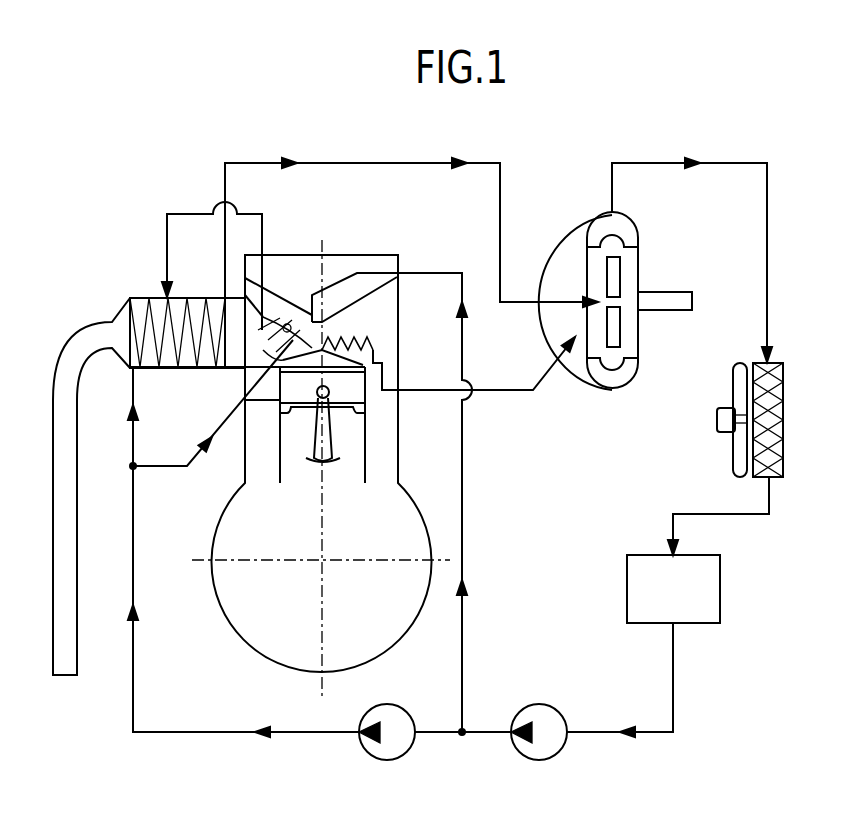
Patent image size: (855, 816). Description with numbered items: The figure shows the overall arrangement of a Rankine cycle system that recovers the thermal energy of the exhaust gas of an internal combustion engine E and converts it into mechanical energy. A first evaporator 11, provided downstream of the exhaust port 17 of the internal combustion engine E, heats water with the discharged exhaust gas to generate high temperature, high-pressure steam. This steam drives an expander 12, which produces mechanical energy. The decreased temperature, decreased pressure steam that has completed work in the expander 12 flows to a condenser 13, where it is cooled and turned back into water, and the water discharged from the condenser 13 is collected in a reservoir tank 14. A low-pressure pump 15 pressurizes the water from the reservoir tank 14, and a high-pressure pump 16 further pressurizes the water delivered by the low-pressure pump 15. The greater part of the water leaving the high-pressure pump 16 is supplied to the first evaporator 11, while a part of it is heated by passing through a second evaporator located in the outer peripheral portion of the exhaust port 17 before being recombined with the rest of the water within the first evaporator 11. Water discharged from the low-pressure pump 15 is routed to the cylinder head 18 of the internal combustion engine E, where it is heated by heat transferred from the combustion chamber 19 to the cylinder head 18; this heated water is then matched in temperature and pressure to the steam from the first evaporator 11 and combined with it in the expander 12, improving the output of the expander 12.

The first evaporator 11 is at (140, 293).
The expander 12 is at (557, 232).
The condenser 13 is at (790, 438).
The reservoir tank 14 is at (703, 625).
The low-pressure pump 15 is at (547, 702).
The high-pressure pump 16 is at (398, 702).
The exhaust port 17 is at (287, 324).
The cylinder head 18 is at (400, 357).
The combustion chamber 19 is at (335, 360).
The internal combustion engine E is at (233, 650).